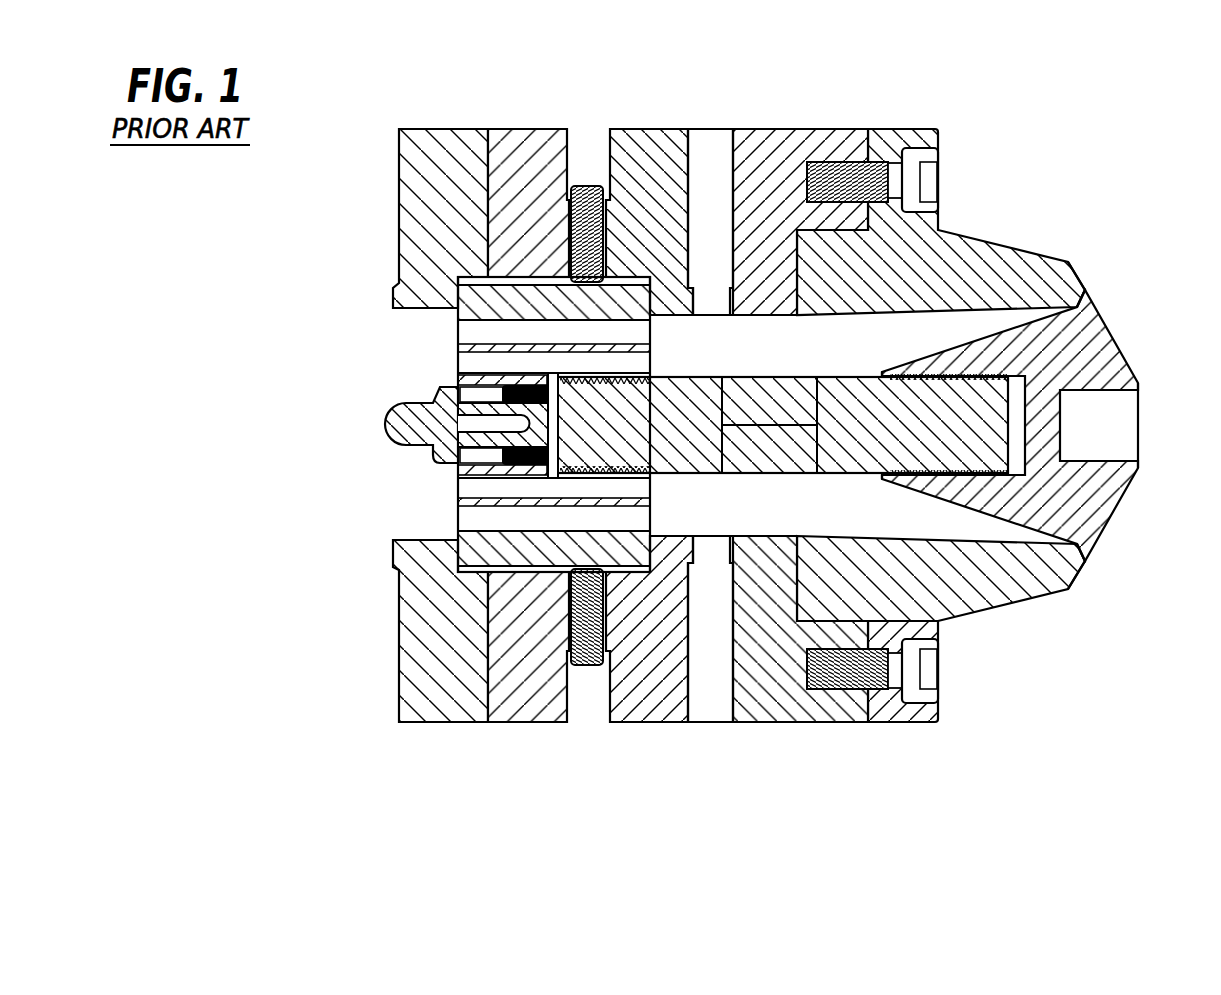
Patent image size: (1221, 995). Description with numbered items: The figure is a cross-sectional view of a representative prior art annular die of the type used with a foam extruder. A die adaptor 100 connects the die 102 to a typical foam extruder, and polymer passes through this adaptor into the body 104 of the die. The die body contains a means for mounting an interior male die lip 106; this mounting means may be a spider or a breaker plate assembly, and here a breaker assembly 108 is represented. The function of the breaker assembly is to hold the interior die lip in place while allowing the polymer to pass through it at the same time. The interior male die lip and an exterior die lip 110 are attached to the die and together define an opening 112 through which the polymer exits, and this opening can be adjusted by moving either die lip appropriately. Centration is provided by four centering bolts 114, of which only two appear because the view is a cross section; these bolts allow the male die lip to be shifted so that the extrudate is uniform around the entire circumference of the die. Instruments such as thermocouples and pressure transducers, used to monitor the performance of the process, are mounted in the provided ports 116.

The die adaptor 100 is at (443, 133).
The die 102 is at (1088, 765).
The die body 104 is at (800, 137).
The interior male die lip 106 is at (1103, 352).
The breaker assembly 108 is at (652, 342).
The exterior die lip 110 is at (1010, 272).
The opening 112 is at (1088, 287).
The centering bolts 114 is at (583, 182).
The ports 116 is at (721, 690).